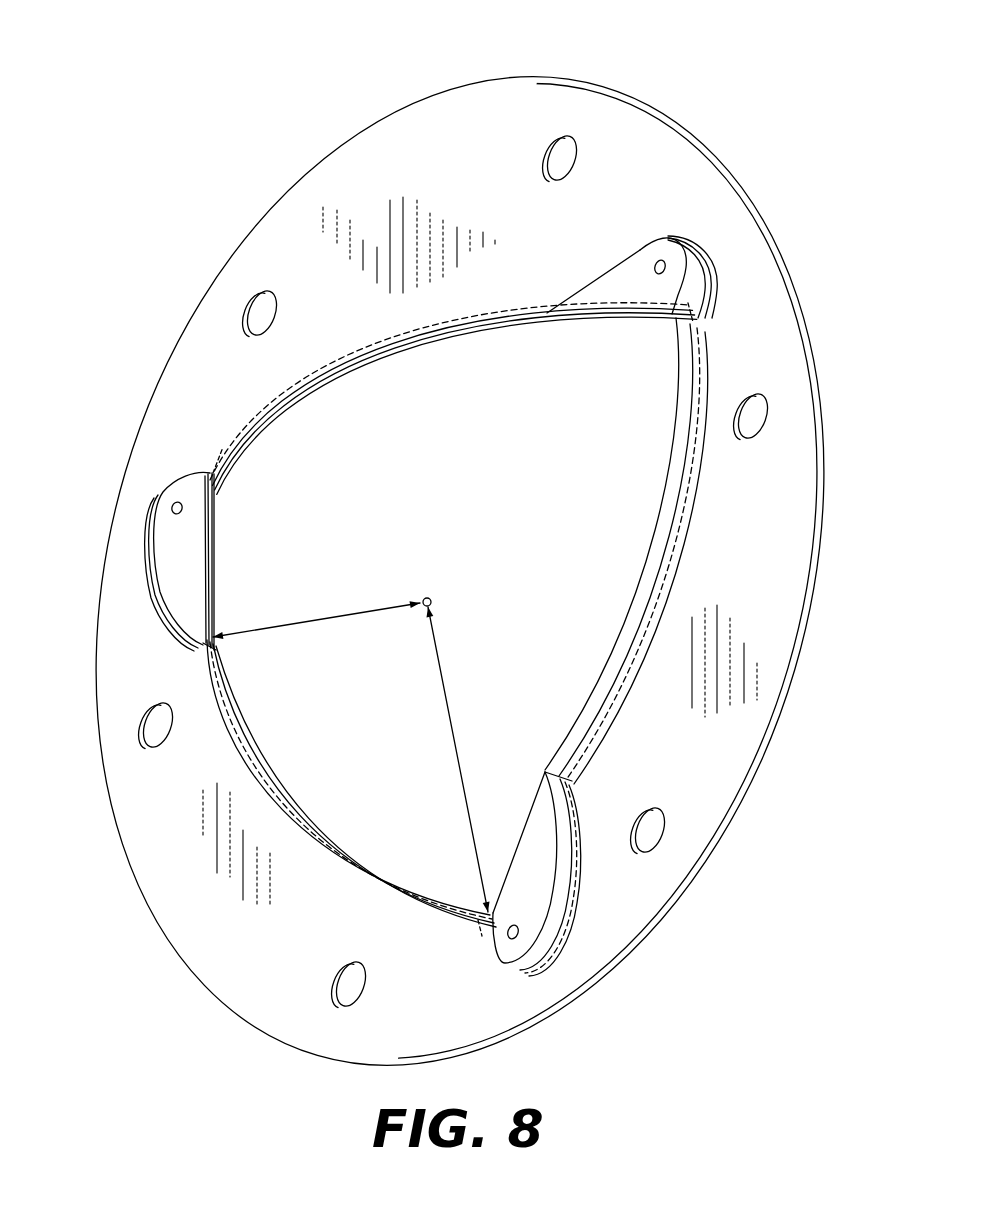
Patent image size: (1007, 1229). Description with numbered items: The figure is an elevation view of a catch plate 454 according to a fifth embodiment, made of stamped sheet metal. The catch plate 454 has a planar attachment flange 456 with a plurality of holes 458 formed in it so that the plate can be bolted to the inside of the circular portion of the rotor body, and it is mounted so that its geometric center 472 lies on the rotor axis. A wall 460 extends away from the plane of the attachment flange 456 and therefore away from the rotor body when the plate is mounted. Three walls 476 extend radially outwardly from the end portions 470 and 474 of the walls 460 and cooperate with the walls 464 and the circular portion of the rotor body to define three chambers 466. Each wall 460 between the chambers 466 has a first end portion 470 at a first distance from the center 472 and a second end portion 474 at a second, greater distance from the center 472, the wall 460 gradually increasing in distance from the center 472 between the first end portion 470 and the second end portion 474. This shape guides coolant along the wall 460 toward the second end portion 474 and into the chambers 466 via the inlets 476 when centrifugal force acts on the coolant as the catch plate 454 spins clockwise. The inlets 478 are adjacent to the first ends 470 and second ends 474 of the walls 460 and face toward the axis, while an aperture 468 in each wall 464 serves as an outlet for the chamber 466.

The catch plate 454 is at (790, 98).
The attachment flange 456 is at (512, 97).
The holes 458 is at (552, 158).
The walls 460 is at (350, 368).
The walls 464 is at (612, 298).
The chambers 466 is at (650, 330).
The aperture 468 is at (662, 258).
The first end portion 470 is at (538, 307).
The geometric center 472 is at (430, 588).
The second end portion 474 is at (680, 317).
The walls 476 is at (608, 278).
The inlets 478 is at (575, 330).